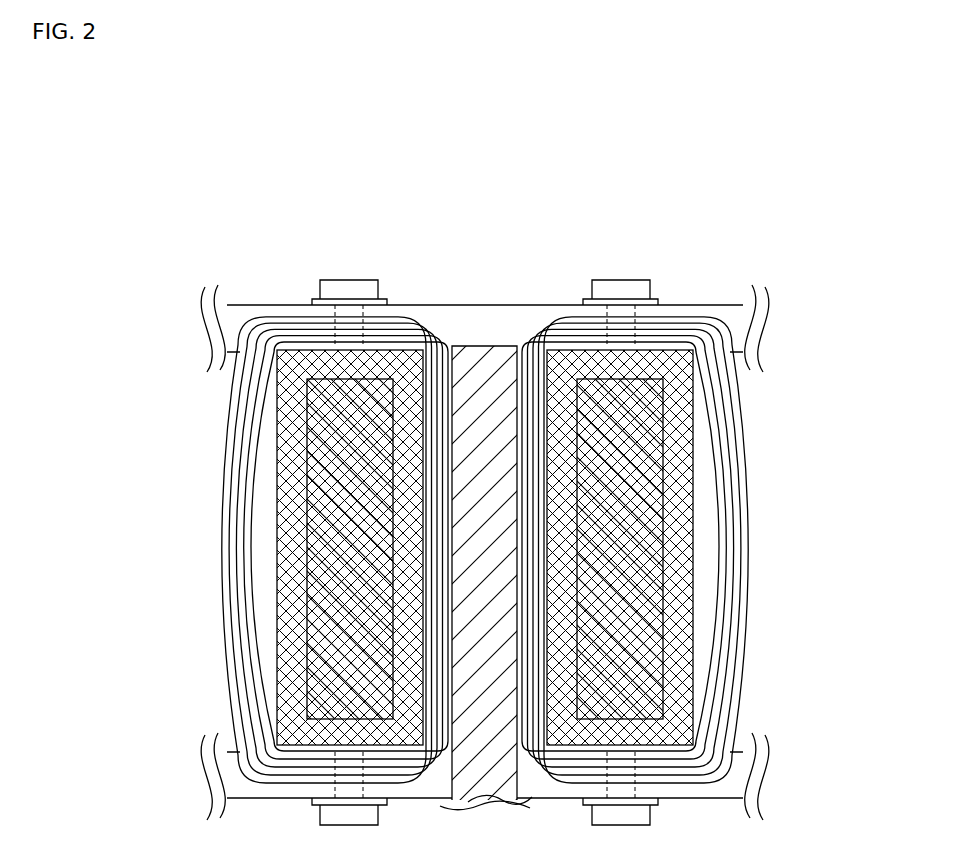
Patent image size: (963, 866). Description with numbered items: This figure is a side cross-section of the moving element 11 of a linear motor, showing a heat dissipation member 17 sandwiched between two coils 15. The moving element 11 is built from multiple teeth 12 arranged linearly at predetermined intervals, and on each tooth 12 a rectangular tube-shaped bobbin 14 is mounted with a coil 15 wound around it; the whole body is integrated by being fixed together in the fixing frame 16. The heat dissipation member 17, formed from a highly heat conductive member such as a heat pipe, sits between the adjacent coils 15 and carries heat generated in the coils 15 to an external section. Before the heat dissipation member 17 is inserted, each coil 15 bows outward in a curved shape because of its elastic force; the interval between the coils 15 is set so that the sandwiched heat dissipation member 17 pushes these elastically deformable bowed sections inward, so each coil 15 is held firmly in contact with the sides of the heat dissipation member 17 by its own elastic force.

The moving element 11 is at (483, 263).
The tooth 12 is at (345, 507).
The rectangular tube-shaped bobbin 14 is at (290, 550).
The coil 15 is at (225, 463).
The fixing frame 16 is at (503, 305).
The heat dissipation member 17 is at (487, 375).